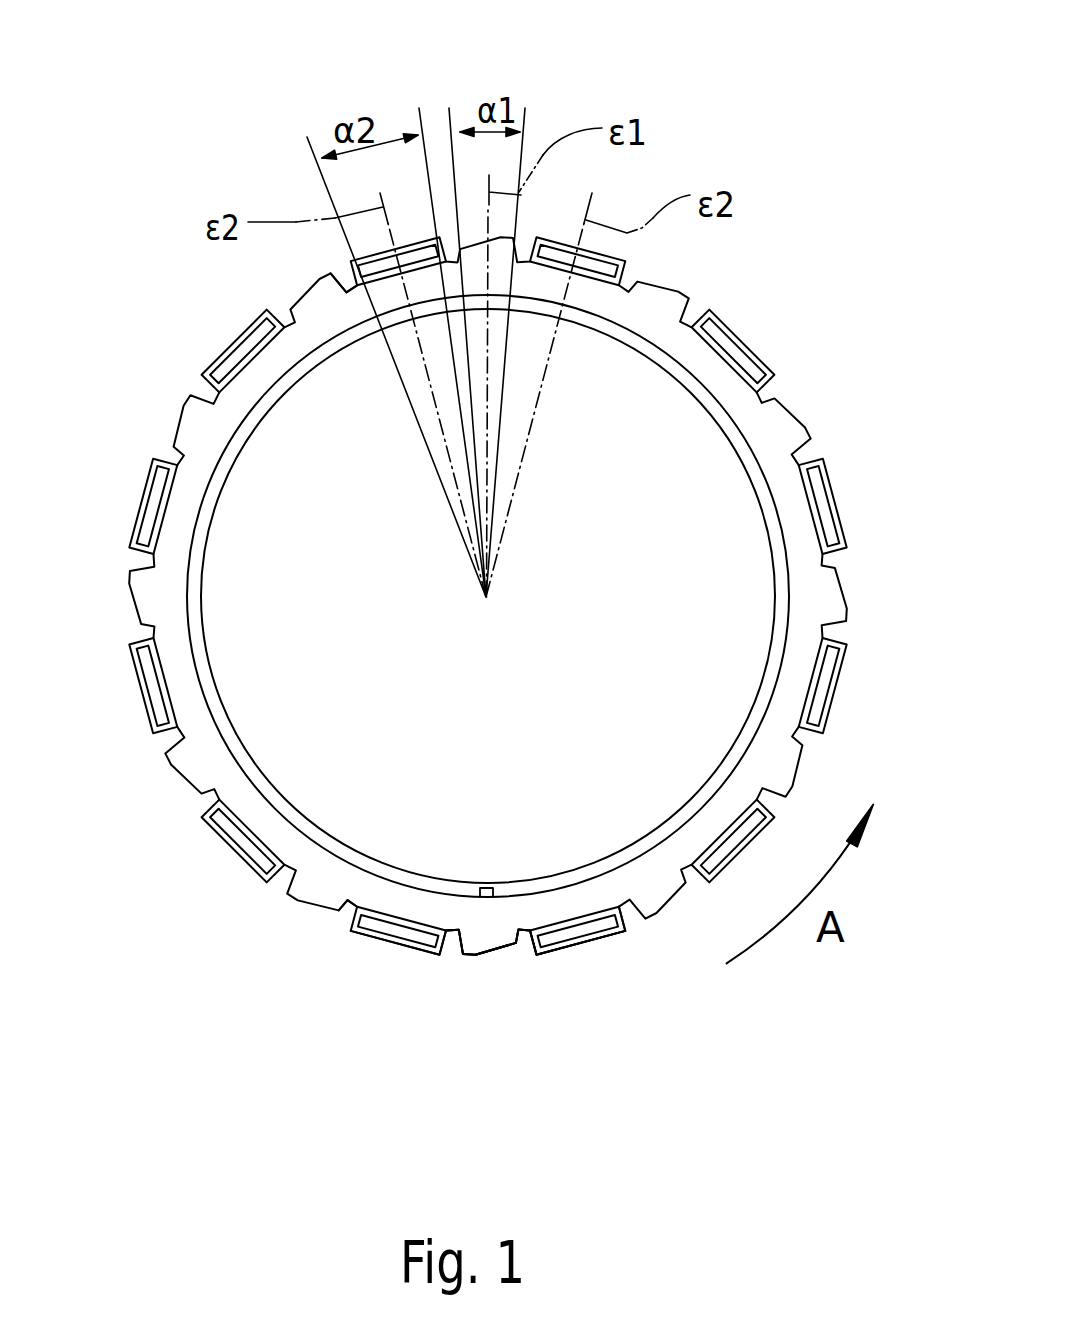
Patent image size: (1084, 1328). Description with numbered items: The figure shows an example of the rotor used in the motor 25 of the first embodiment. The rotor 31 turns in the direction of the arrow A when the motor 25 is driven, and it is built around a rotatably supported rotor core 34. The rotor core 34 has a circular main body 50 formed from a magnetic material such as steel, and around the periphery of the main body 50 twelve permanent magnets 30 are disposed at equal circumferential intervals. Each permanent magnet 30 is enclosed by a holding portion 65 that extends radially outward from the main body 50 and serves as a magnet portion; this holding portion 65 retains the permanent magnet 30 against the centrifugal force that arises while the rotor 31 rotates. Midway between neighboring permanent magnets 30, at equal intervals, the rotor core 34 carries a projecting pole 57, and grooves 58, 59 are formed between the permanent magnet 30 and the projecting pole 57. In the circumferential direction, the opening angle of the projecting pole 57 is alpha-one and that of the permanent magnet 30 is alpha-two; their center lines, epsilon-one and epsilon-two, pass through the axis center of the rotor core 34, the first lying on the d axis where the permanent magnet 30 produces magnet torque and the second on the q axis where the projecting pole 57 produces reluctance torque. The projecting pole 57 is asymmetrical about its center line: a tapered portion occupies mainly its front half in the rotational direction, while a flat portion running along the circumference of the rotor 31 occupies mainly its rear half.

The motor 25 is at (697, 93).
The rotor 31 is at (777, 300).
The permanent magnet 30 is at (393, 938).
The rotor core 34 is at (670, 1117).
The main body 50 is at (500, 910).
The projecting pole 57 is at (472, 952).
The groove 58 is at (344, 911).
The groove 59 is at (447, 948).
The holding portion 65 is at (588, 953).